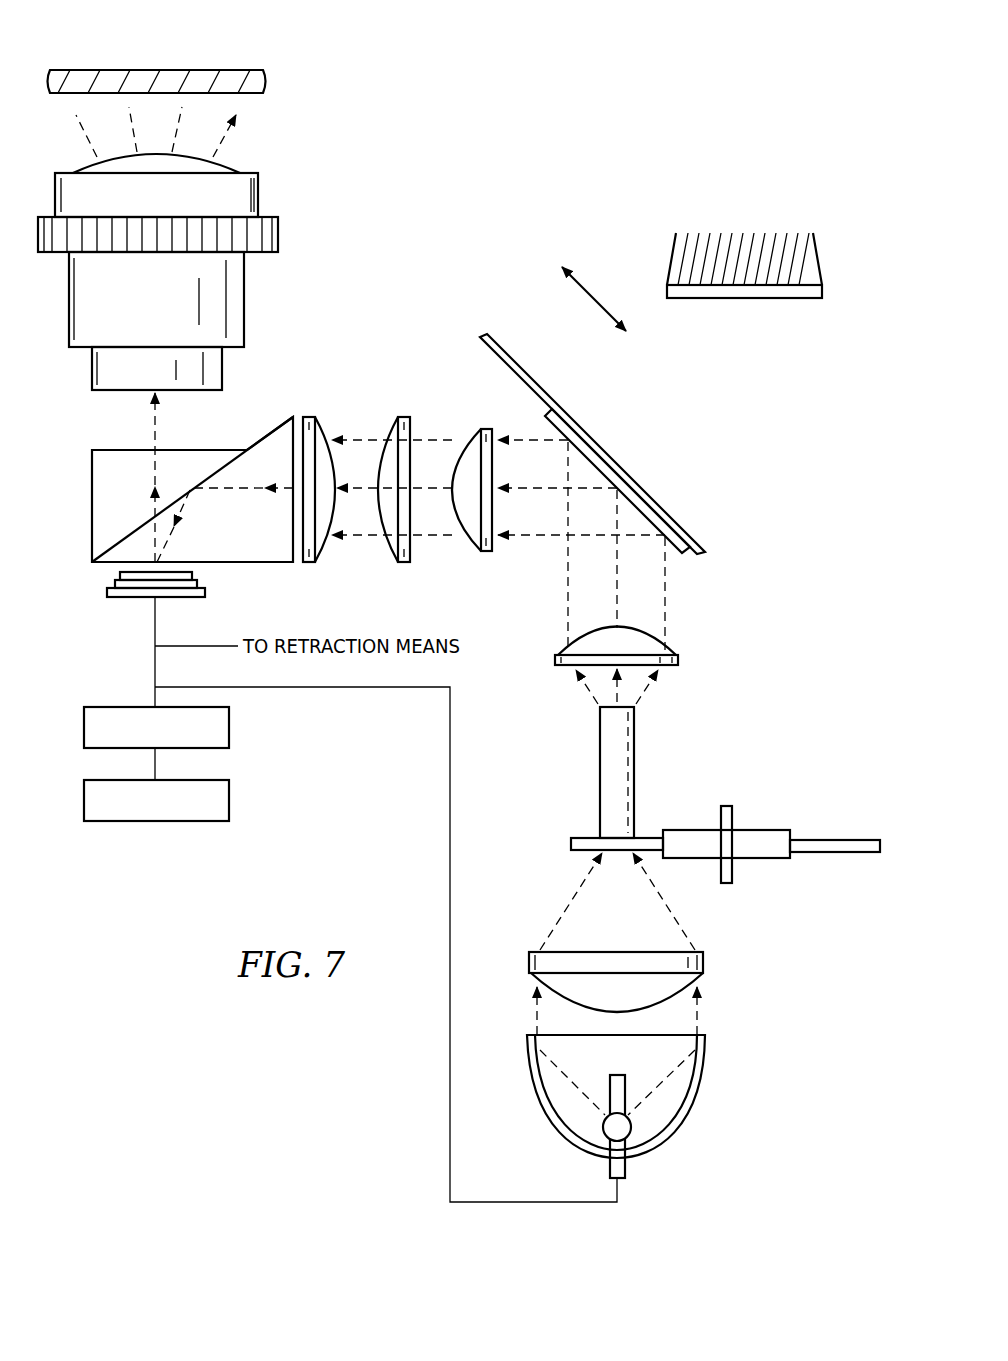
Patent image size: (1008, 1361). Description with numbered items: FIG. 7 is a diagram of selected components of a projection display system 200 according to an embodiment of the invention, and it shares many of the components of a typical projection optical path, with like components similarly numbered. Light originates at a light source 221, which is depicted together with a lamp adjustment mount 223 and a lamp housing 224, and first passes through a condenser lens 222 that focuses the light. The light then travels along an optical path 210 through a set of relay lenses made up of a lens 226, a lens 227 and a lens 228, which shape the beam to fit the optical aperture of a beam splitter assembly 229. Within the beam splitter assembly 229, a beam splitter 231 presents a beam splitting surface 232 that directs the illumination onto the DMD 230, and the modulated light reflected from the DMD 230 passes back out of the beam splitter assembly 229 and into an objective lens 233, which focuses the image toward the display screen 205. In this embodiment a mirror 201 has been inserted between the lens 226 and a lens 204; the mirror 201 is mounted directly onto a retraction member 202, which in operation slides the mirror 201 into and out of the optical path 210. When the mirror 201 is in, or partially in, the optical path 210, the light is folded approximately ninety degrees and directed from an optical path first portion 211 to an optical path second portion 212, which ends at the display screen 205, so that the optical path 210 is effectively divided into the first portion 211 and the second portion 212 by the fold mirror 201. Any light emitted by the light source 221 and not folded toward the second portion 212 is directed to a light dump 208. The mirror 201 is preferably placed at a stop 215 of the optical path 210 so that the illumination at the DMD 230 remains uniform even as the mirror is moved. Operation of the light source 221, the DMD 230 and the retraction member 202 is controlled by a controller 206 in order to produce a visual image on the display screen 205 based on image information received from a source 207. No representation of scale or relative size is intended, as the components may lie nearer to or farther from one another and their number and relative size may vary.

The projection display system 200 is at (592, 178).
The mirror 201 is at (680, 555).
The retraction member 202 is at (595, 438).
The lens 204 is at (487, 552).
The display screen 205 is at (143, 70).
The controller 206 is at (229, 727).
The source 207 is at (229, 800).
The light dump 208 is at (746, 300).
The optical path 210 is at (629, 437).
The optical path first portion 211 is at (703, 903).
The optical path second portion 212 is at (482, 447).
The stop 215 is at (540, 430).
The light source 221 is at (690, 1090).
The condenser lens 222 is at (707, 962).
The lamp adjustment mount 223 is at (770, 833).
The lamp housing 224 is at (597, 775).
The lens 226 is at (680, 660).
The lens 227 is at (405, 415).
The lens 228 is at (309, 415).
The beam splitter assembly 229 is at (160, 496).
The DMD 230 is at (135, 597).
The beam splitter 231 is at (118, 450).
The beam splitting surface 232 is at (133, 526).
The objective lens 233 is at (262, 193).